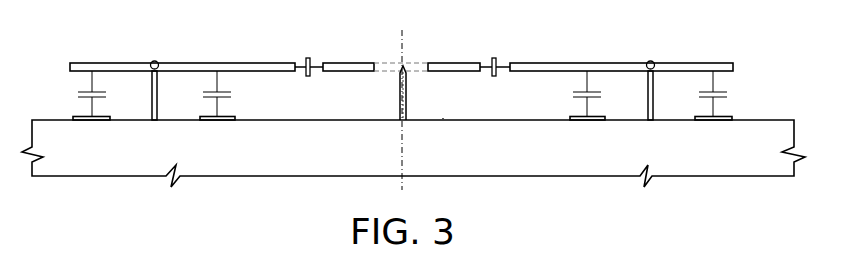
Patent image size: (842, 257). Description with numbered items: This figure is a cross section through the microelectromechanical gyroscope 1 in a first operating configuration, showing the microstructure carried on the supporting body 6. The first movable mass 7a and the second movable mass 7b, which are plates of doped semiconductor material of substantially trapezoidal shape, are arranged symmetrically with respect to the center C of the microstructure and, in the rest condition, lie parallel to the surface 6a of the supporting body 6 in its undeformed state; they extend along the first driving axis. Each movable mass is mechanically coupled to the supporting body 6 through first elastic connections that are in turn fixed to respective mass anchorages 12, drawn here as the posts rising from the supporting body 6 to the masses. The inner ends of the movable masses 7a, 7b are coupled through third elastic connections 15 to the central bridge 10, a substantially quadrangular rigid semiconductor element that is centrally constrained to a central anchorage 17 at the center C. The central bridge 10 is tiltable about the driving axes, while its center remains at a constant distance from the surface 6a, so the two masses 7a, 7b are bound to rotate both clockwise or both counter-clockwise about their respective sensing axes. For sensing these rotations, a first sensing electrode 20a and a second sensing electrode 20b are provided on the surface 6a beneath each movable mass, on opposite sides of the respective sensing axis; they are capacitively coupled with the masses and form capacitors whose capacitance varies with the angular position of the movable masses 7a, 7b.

The microelectromechanical gyroscope 1 is at (762, 69).
The supporting body 6 is at (319, 174).
The surface of the supporting body 6a is at (443, 119).
The first movable mass 7a is at (196, 62).
The second movable mass 7b is at (606, 62).
The central bridge 10 is at (350, 62).
The mass anchorage 12 is at (151, 112).
The third elastic connection 15 is at (307, 58).
The central anchorage 17 is at (399, 105).
The first sensing electrode 20a is at (78, 117).
The second sensing electrode 20b is at (232, 117).
The center of the microstructure C is at (404, 57).